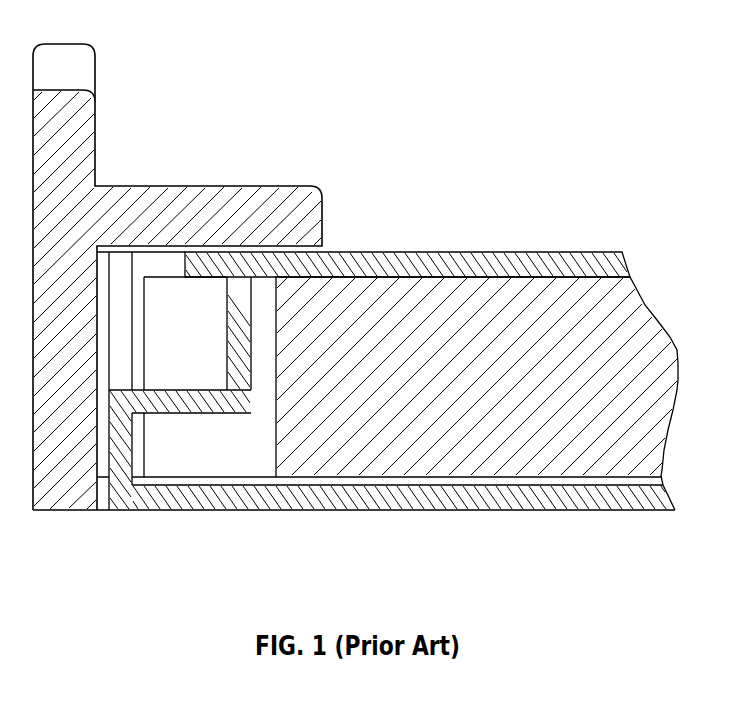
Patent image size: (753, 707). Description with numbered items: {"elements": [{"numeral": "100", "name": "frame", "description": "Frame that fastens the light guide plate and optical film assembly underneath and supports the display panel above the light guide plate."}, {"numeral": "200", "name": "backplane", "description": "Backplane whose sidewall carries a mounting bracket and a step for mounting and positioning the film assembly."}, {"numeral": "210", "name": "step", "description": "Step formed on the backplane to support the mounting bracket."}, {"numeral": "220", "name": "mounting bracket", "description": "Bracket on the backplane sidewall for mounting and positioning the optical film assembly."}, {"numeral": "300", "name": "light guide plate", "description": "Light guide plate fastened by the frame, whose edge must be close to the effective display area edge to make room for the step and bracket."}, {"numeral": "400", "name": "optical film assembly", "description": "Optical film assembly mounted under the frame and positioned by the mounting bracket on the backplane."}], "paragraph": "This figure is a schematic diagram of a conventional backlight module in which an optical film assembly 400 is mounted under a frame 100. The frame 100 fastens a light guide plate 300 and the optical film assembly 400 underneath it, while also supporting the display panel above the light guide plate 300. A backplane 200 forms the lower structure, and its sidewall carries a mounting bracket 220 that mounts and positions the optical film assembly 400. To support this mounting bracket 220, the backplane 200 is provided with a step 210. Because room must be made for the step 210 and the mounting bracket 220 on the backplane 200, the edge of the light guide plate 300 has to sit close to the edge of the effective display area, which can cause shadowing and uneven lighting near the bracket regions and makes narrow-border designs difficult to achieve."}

The frame 100 is at (65, 140).
The back plate 200 is at (292, 495).
The bent portion of back plate 210 is at (167, 403).
The support portion 220 is at (238, 322).
The light guide plate 300 is at (610, 318).
The optical film 400 is at (415, 256).